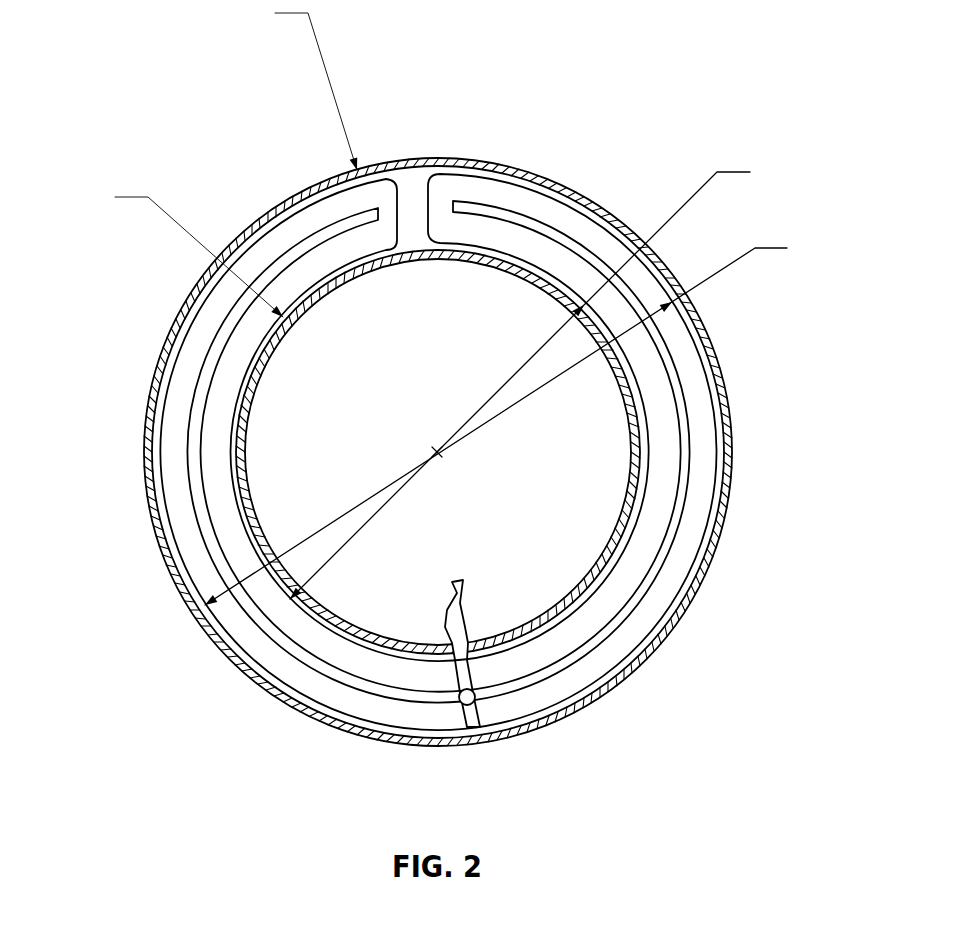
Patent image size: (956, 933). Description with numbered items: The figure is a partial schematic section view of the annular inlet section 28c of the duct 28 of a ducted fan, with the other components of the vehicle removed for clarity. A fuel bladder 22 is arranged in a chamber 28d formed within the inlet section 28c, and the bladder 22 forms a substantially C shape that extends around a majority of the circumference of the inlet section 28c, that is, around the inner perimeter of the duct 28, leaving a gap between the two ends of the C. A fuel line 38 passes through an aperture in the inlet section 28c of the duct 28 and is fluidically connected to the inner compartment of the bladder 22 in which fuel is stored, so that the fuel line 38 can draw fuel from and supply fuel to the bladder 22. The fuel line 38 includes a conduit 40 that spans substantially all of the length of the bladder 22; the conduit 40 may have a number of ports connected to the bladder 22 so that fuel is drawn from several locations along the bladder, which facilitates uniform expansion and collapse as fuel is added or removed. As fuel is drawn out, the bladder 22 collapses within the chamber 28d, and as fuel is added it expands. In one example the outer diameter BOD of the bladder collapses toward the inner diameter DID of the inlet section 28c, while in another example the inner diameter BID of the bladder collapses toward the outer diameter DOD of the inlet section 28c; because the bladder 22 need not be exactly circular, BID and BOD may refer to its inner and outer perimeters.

The bladder 22 is at (300, 214).
The duct 28 is at (466, 146).
The inlet section 28c is at (575, 195).
The chamber 28d is at (433, 226).
The fuel line 38 is at (452, 586).
The conduit 40 is at (677, 367).
The inner diameter of the bladder BID is at (539, 380).
The outer diameter of the bladder BOD is at (518, 421).
The inner diameter of the inlet section DID is at (181, 250).
The outer diameter of the inlet section DOD is at (297, 85).